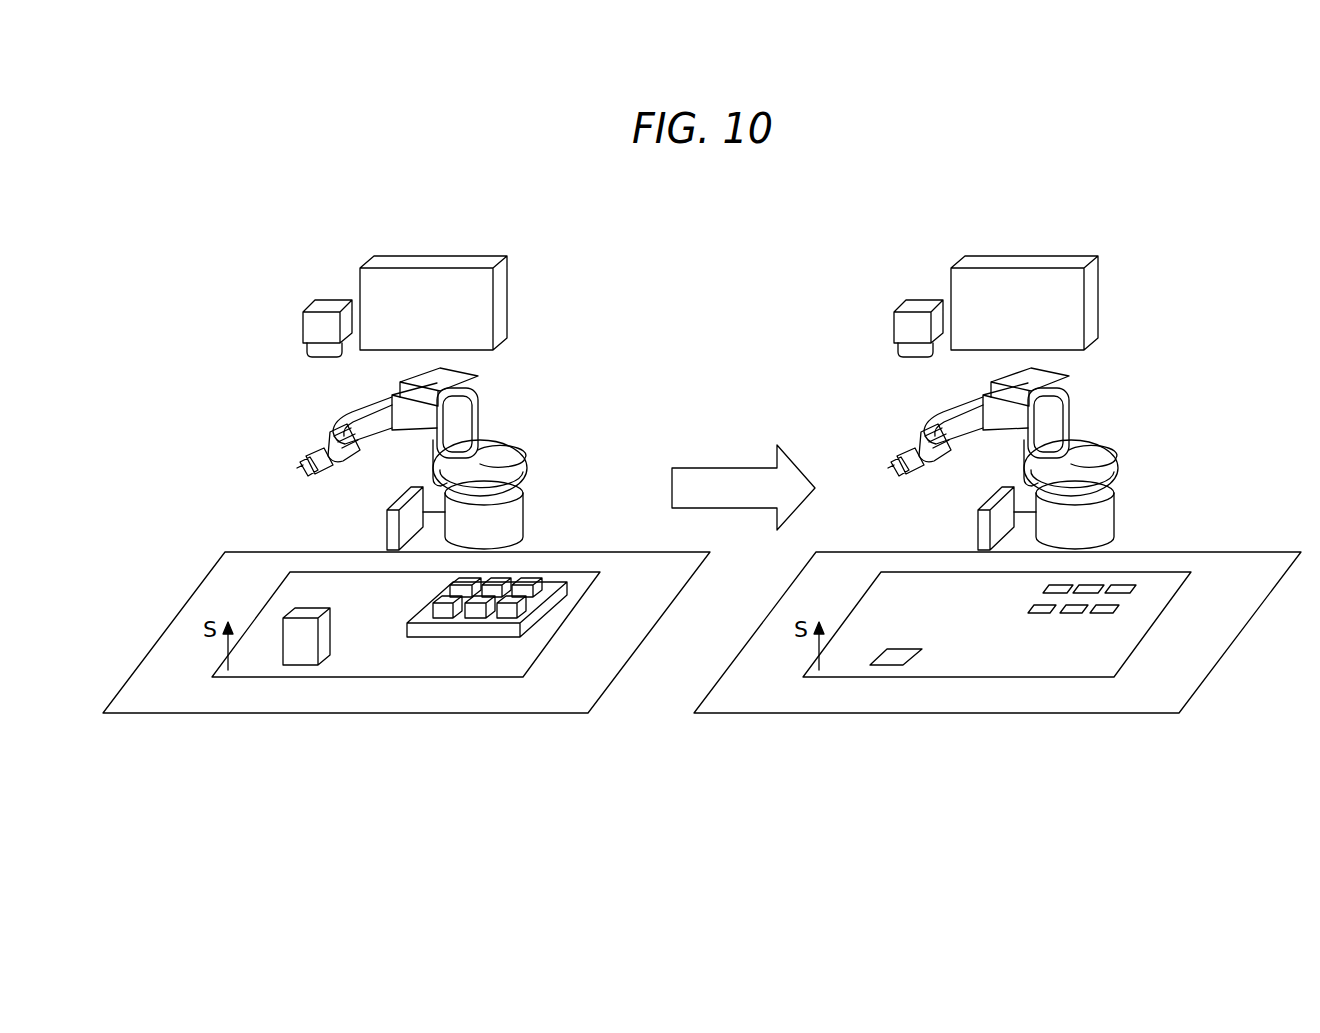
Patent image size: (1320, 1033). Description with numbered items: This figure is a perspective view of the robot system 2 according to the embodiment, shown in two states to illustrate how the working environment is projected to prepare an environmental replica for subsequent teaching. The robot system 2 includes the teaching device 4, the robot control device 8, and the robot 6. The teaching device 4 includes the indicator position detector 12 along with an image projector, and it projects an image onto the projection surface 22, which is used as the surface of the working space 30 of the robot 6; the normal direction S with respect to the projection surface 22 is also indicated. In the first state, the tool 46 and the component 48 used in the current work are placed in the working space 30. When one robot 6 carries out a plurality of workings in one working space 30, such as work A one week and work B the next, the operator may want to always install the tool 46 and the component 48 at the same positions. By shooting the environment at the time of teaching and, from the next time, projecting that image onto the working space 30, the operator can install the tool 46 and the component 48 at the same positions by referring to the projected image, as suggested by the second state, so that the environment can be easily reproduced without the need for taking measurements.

The robot system 2 is at (581, 307).
The teaching device 4 is at (408, 258).
The robot 6 is at (500, 426).
The robot control device 8 is at (397, 500).
The indicator position detector 12 is at (317, 330).
The projection surface 22 is at (262, 610).
The working space 30 is at (380, 657).
The tool 46 is at (300, 650).
The component 48 is at (508, 618).